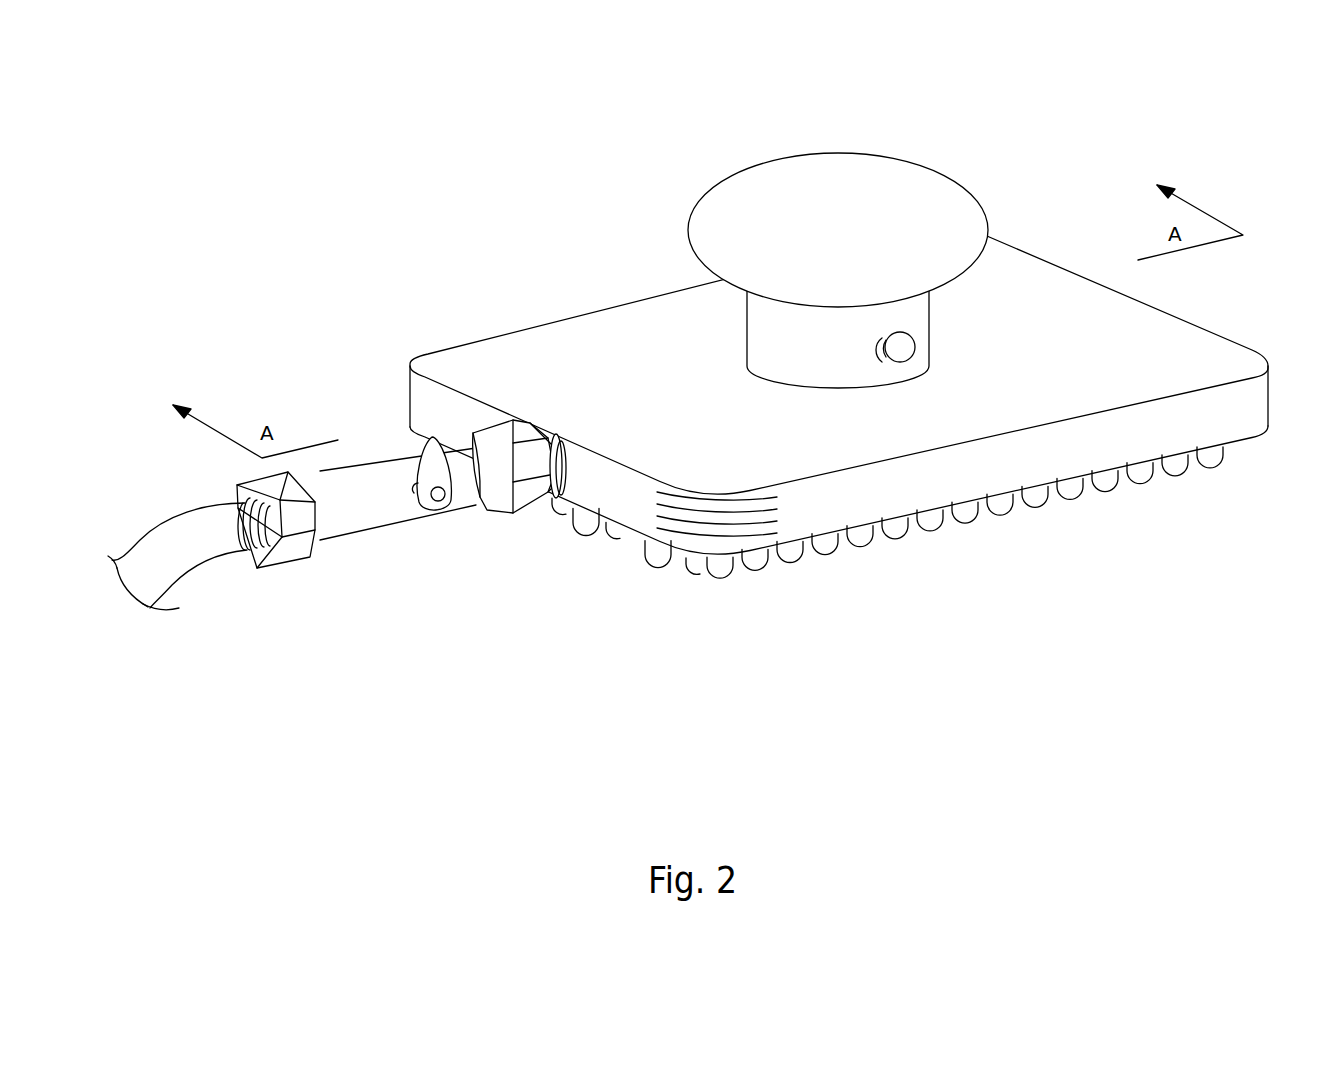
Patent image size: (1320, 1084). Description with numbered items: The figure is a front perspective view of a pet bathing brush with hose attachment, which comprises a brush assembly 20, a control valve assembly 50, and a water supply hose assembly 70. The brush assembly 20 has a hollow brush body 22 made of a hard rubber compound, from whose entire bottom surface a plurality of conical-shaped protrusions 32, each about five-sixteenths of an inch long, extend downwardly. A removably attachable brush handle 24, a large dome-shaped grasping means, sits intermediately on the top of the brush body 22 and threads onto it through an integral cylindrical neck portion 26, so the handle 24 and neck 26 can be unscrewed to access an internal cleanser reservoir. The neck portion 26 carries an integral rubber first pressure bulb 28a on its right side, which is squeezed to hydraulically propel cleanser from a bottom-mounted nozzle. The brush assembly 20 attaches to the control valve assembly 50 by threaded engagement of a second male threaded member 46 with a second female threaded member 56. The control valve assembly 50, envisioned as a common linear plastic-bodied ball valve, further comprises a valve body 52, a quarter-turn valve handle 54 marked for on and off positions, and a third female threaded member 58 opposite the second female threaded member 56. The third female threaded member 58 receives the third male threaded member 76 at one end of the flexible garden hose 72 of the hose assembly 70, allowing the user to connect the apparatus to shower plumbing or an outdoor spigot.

The brush assembly 20 is at (633, 163).
The brush body 22 is at (1177, 313).
The brush handle 24 is at (882, 183).
The neck portion 26 is at (747, 332).
The first pressure bulb 28a is at (900, 357).
The conical-shaped protrusions 32 is at (1037, 497).
The second male threaded member 46 is at (557, 447).
The control valve assembly 50 is at (383, 563).
The valve body 52 is at (465, 498).
The quarter-turn valve handle 54 is at (417, 450).
The second female threaded member 56 is at (525, 500).
The third female threaded member 58 is at (297, 552).
The hose assembly 70 is at (153, 531).
The hose 72 is at (150, 585).
The third male threaded member 76 is at (233, 508).